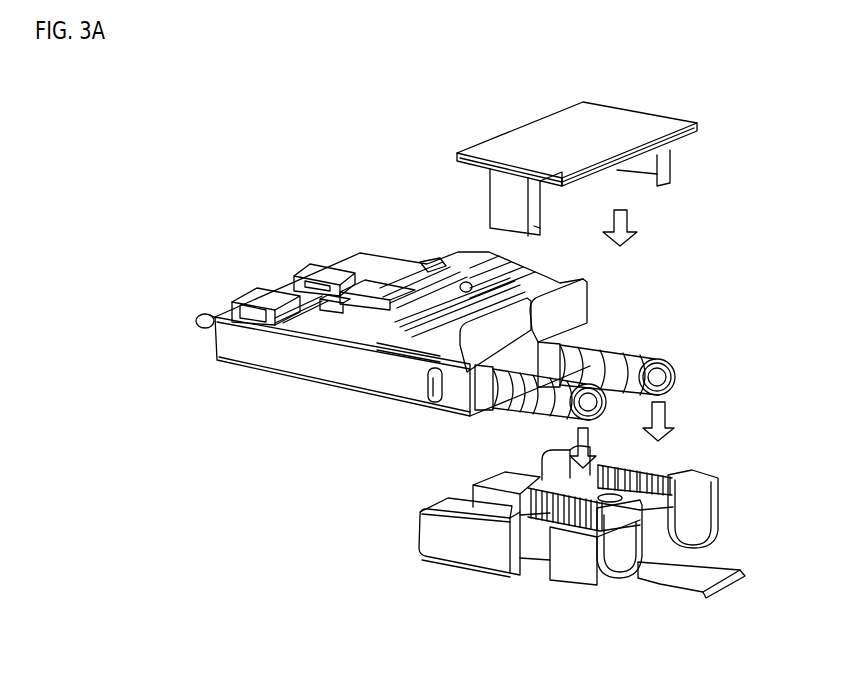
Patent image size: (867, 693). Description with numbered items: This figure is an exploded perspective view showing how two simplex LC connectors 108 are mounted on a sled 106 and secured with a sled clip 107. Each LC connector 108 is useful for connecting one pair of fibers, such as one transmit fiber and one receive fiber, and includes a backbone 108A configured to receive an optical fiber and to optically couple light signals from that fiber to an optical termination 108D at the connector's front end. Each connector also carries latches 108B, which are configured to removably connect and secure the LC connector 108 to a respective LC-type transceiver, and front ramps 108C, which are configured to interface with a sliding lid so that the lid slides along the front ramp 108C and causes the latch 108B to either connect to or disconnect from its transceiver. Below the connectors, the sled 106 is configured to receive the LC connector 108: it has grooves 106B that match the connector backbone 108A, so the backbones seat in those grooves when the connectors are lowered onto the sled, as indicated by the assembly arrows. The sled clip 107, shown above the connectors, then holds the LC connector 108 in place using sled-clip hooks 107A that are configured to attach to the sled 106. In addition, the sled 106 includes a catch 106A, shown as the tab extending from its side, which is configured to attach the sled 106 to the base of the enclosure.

The sled 106 is at (423, 537).
The catch 106A is at (683, 598).
The grooves 106B is at (628, 531).
The sled clip 107 is at (507, 132).
The sled-clip hooks 107A is at (668, 170).
The LC connectors 108 is at (178, 437).
The backbone 108A is at (653, 354).
The latches 108B is at (324, 264).
The front ramps 108C is at (557, 281).
The optical termination 108D is at (206, 314).